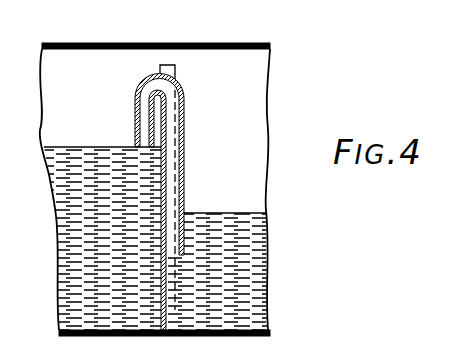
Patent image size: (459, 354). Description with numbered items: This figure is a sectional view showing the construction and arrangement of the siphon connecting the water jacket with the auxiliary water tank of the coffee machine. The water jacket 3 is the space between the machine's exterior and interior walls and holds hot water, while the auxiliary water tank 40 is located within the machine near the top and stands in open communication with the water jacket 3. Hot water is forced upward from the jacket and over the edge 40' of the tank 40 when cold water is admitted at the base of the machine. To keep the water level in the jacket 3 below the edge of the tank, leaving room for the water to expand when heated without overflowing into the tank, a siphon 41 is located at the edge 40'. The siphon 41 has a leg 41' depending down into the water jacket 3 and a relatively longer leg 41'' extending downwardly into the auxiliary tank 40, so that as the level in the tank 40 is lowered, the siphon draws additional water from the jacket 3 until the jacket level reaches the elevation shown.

The water jacket 3 is at (58, 218).
The auxiliary water tank 40 is at (181, 238).
The edge of the tank 40' is at (185, 160).
The siphon 41 is at (188, 85).
The leg 41' is at (137, 165).
The longer leg 41'' is at (203, 210).